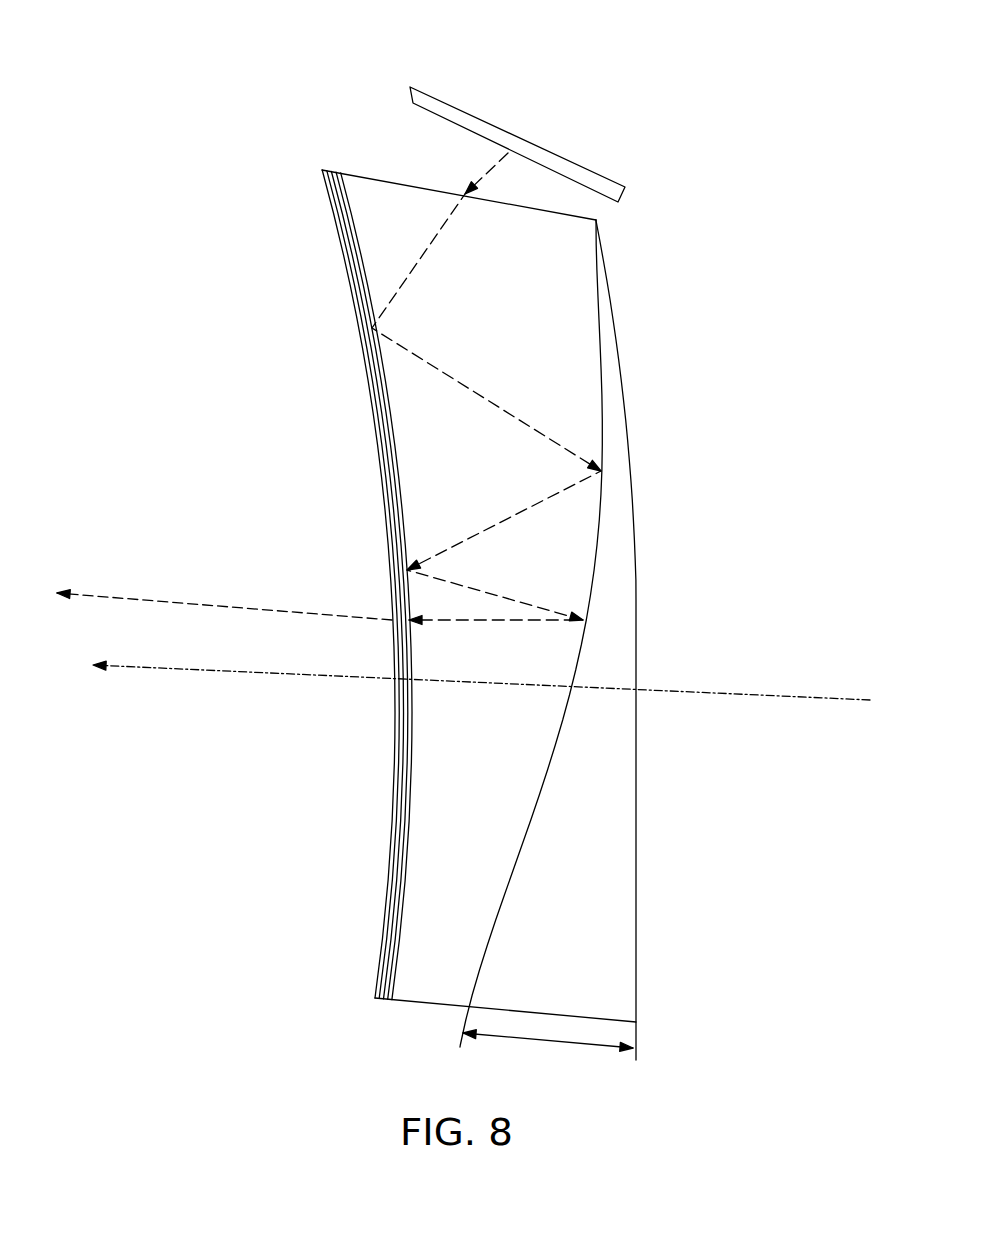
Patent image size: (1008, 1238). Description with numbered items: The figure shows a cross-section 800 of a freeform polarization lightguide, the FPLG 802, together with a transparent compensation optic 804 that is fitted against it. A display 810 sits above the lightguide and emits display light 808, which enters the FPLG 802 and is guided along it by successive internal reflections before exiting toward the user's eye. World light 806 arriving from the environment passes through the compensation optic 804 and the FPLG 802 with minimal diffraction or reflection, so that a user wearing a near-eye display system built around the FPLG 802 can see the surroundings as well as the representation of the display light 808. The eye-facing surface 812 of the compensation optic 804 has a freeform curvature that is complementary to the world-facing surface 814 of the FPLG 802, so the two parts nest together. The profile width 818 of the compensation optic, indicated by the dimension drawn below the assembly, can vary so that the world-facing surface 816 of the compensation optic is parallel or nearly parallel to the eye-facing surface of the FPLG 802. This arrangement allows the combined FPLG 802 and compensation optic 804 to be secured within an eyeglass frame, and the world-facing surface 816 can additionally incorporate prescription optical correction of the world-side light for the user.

The cross-section 800 is at (490, 88).
The FPLG 802 is at (396, 190).
The compensation optic 804 is at (584, 640).
The world light 806 is at (285, 673).
The display light 808 is at (290, 610).
The display 810 is at (573, 163).
The eye-facing surface 812 is at (533, 835).
The world-facing surface 814 is at (550, 760).
The world-facing surface 816 is at (637, 800).
The profile width 818 is at (548, 1043).